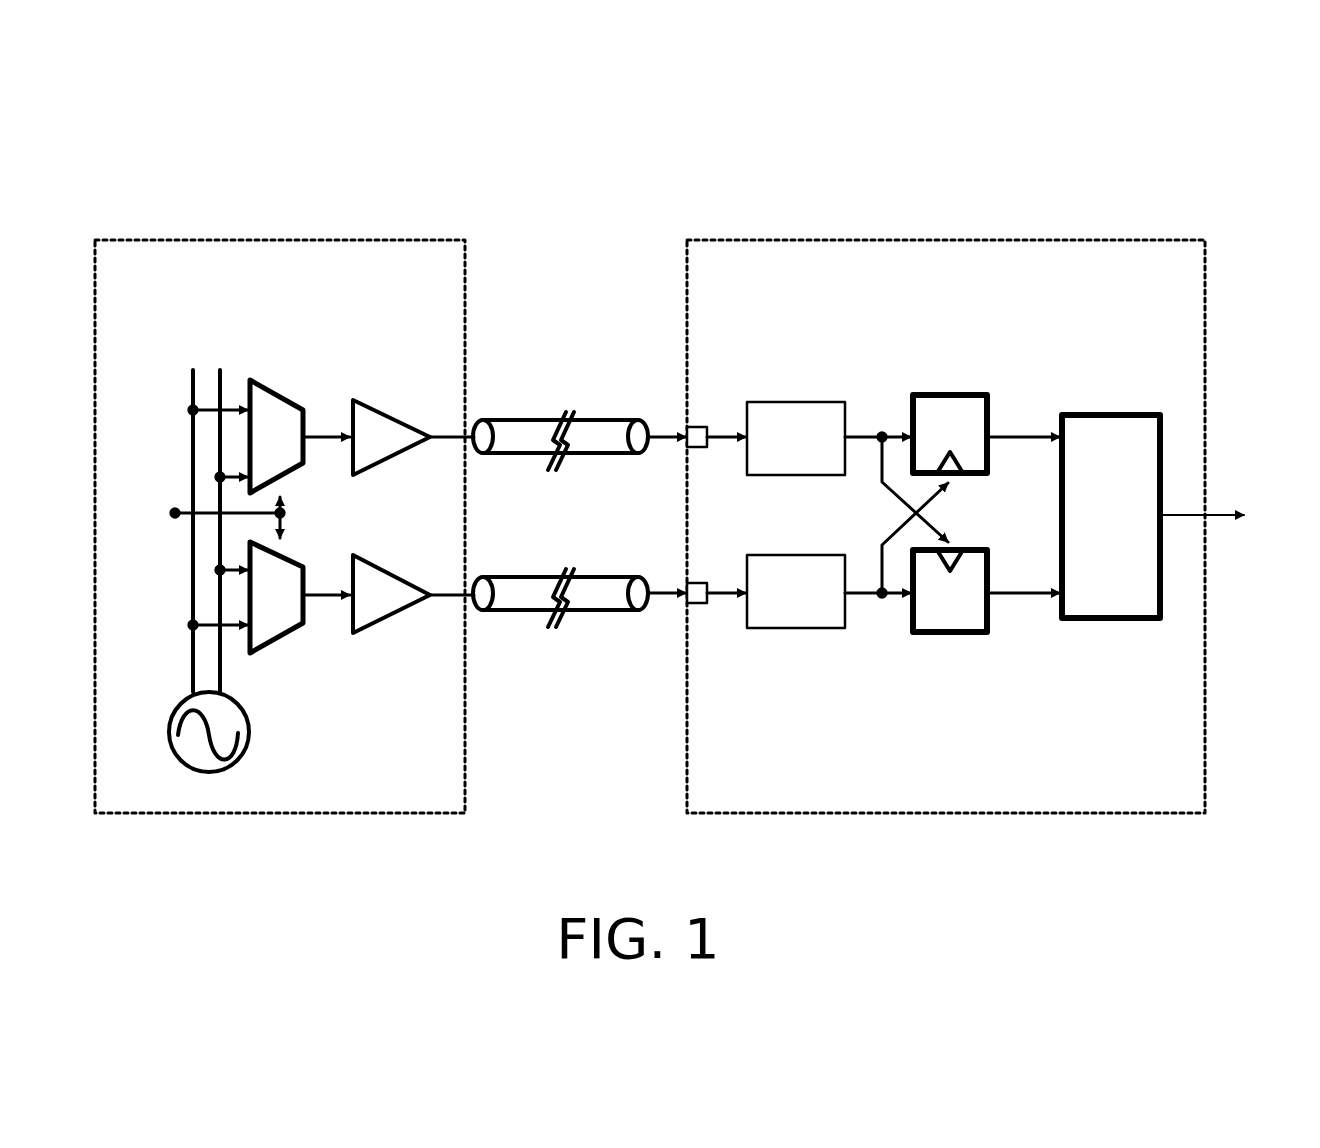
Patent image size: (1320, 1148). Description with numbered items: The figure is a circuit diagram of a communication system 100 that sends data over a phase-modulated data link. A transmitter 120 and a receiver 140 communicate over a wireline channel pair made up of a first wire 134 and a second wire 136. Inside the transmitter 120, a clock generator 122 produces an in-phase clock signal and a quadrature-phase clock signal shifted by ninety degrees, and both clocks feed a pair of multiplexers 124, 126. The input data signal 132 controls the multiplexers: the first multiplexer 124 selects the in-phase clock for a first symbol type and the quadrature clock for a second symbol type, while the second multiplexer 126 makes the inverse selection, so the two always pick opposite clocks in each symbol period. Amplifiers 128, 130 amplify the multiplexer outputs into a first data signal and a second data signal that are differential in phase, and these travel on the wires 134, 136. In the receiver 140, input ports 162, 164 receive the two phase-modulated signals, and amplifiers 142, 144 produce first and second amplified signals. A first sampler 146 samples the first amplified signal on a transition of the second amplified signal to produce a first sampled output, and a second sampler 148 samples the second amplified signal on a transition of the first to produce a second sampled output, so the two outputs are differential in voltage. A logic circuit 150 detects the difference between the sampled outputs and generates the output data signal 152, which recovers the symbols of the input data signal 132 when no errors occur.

The communication system 100 is at (400, 190).
The transmitter 120 is at (278, 283).
The clock generator 122 is at (243, 754).
The first multiplexer 124 is at (283, 398).
The second multiplexer 126 is at (290, 637).
The amplifier 128 is at (378, 408).
The amplifier 130 is at (405, 612).
The input data signal 132 is at (150, 545).
The first wire 134 is at (588, 420).
The second wire 136 is at (580, 612).
The receiver 140 is at (854, 283).
The amplifier 142 is at (795, 402).
The amplifier 144 is at (800, 628).
The first sampler 146 is at (952, 395).
The second sampler 148 is at (957, 632).
The logic circuit 150 is at (1106, 415).
The output data signal 152 is at (1303, 545).
The input port 162 is at (700, 427).
The input port 164 is at (700, 583).